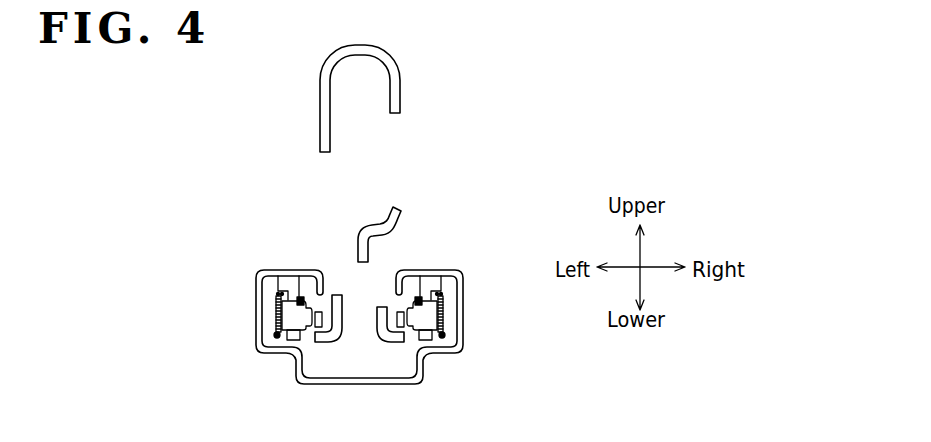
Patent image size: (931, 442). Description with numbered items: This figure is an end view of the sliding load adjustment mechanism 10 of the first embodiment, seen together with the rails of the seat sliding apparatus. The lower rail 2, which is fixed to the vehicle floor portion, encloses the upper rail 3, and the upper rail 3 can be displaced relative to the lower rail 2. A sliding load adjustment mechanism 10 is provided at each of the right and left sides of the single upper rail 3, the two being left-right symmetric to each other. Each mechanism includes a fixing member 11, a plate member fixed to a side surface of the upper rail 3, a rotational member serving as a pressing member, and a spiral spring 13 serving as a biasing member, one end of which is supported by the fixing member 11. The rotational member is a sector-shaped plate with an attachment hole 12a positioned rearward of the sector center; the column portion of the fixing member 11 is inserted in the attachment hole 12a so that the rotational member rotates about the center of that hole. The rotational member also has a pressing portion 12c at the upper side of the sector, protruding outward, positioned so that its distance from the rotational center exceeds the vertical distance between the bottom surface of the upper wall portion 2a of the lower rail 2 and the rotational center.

The lower rail 2 is at (368, 302).
The upper wall portion 2a is at (408, 267).
The upper rail 3 is at (338, 293).
The sliding load adjustment mechanism 10 is at (492, 149).
The fixing member 11 is at (292, 310).
The attachment hole 12a is at (279, 337).
The pressing portion 12c is at (272, 283).
The spiral spring 13 is at (277, 294).